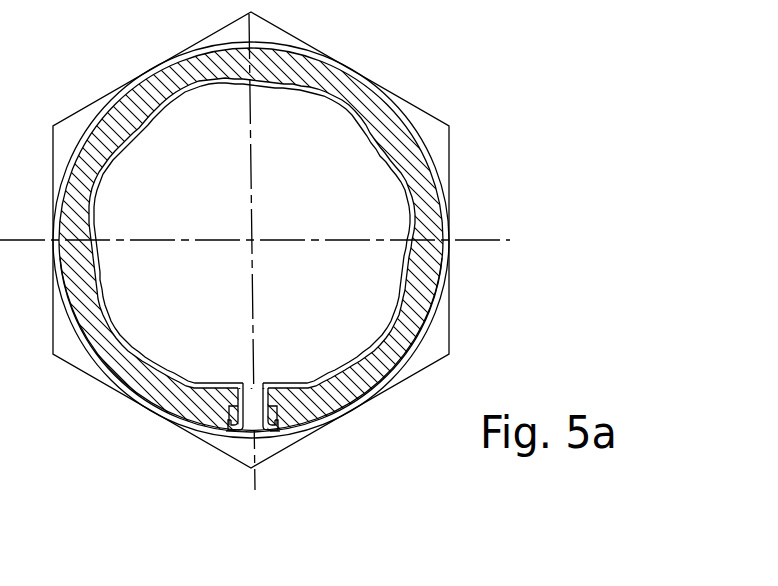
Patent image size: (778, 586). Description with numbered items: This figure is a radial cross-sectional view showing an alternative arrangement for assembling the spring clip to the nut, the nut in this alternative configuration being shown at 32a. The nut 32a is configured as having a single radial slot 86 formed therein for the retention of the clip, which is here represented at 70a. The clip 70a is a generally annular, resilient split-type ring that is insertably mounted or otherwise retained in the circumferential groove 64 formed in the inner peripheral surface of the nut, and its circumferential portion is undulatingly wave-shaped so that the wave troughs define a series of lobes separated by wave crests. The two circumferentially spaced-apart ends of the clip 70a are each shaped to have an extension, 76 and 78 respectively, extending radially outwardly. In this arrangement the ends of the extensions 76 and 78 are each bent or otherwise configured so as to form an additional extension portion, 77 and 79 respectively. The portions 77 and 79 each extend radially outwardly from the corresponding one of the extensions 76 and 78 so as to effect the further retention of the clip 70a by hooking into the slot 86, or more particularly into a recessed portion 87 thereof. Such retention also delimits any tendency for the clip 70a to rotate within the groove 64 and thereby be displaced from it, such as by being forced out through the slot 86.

The nut 32a is at (546, 80).
The circumferential groove 64 is at (362, 112).
The spring clip 70a is at (118, 154).
The extension 78 is at (243, 404).
The extension 76 is at (266, 402).
The additional extension portion 79 is at (231, 428).
The radial slot 86 is at (266, 430).
The recessed portion 87 is at (232, 432).
The additional extension portion 77 is at (282, 436).